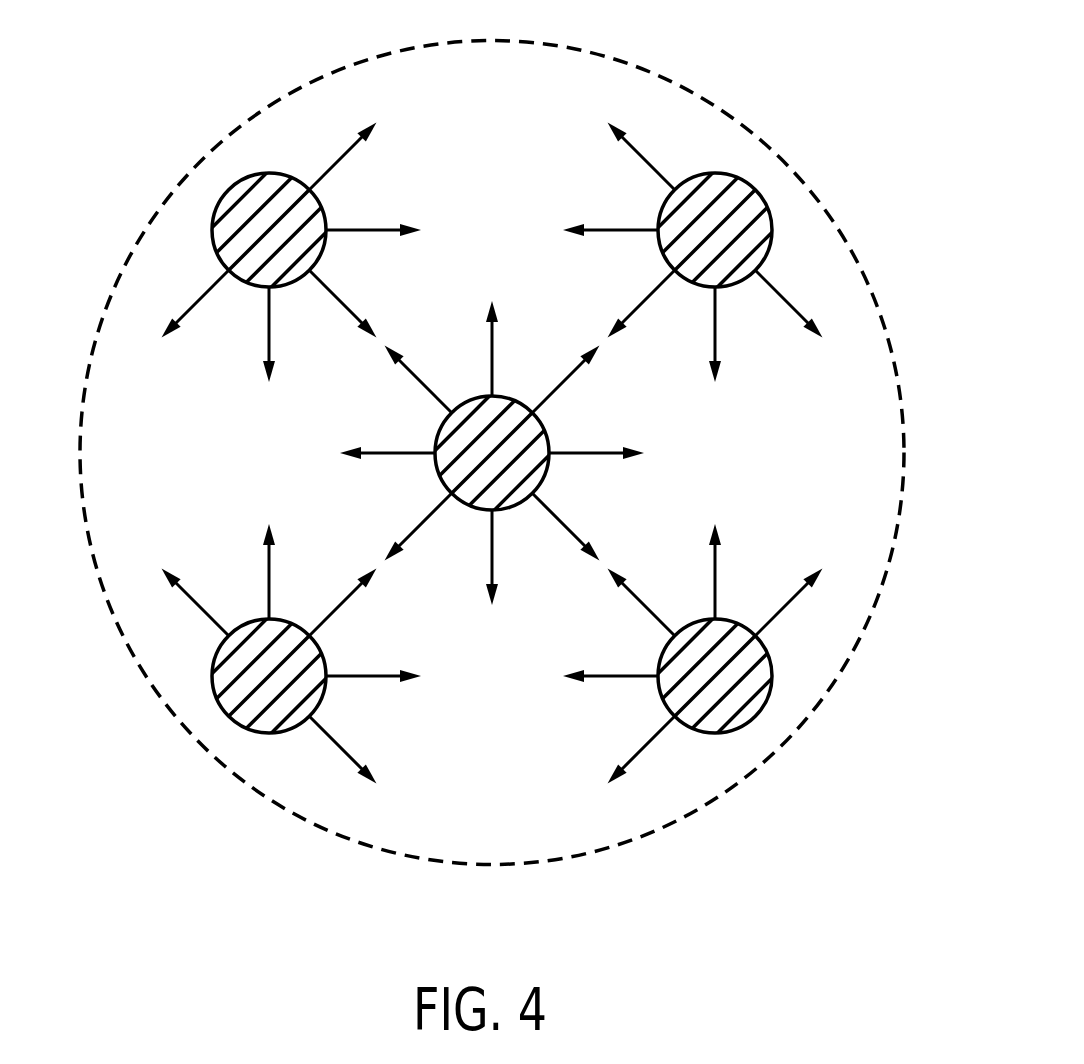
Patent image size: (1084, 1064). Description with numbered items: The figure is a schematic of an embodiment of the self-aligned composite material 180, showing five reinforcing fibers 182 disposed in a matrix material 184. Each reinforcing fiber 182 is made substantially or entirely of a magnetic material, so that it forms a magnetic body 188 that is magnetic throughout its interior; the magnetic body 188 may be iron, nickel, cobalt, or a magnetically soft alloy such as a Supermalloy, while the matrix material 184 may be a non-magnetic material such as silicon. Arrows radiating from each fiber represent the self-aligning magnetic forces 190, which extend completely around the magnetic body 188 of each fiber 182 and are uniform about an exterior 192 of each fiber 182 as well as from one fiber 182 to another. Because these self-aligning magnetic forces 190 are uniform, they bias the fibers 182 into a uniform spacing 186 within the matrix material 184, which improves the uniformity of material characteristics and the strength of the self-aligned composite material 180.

The self-aligned composite material 180 is at (665, 78).
The reinforcing fiber 182 is at (229, 181).
The matrix material 184 is at (540, 63).
The uniform spacing 186 is at (482, 823).
The magnetic body 188 is at (212, 217).
The self-aligning magnetic forces 190 is at (367, 229).
The exterior 192 is at (773, 668).